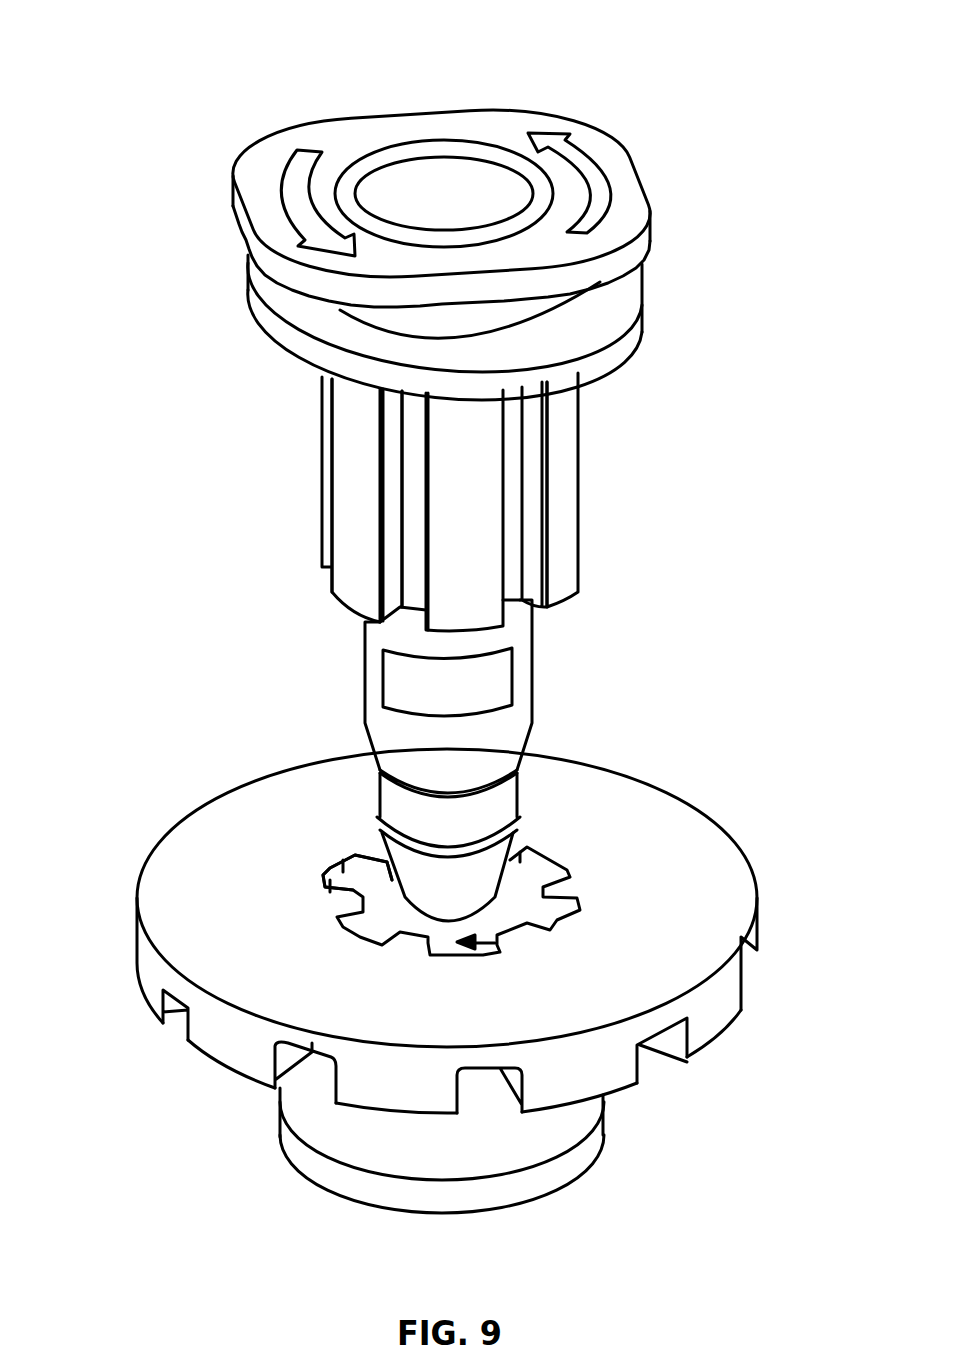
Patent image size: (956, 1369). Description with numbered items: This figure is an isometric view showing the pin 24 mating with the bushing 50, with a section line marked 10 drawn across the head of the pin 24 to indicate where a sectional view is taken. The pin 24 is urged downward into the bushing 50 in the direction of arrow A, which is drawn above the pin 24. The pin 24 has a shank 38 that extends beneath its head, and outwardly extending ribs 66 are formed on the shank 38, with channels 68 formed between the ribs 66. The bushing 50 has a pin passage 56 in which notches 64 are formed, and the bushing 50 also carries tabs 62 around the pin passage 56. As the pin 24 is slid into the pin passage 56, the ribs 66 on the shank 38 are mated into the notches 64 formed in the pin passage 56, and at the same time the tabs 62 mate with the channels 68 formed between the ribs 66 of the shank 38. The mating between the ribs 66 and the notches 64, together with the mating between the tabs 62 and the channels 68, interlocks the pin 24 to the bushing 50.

The direction arrow A is at (443, 0).
The section line 10- 10 is at (232, 191).
The pin 24 is at (641, 296).
The shank 38 is at (465, 647).
The ribs 66 is at (347, 530).
The channels 68 is at (419, 465).
The bushing 50 is at (454, 962).
The tabs 62 is at (347, 900).
The notches 64 is at (347, 857).
The pin passage 56 is at (495, 943).